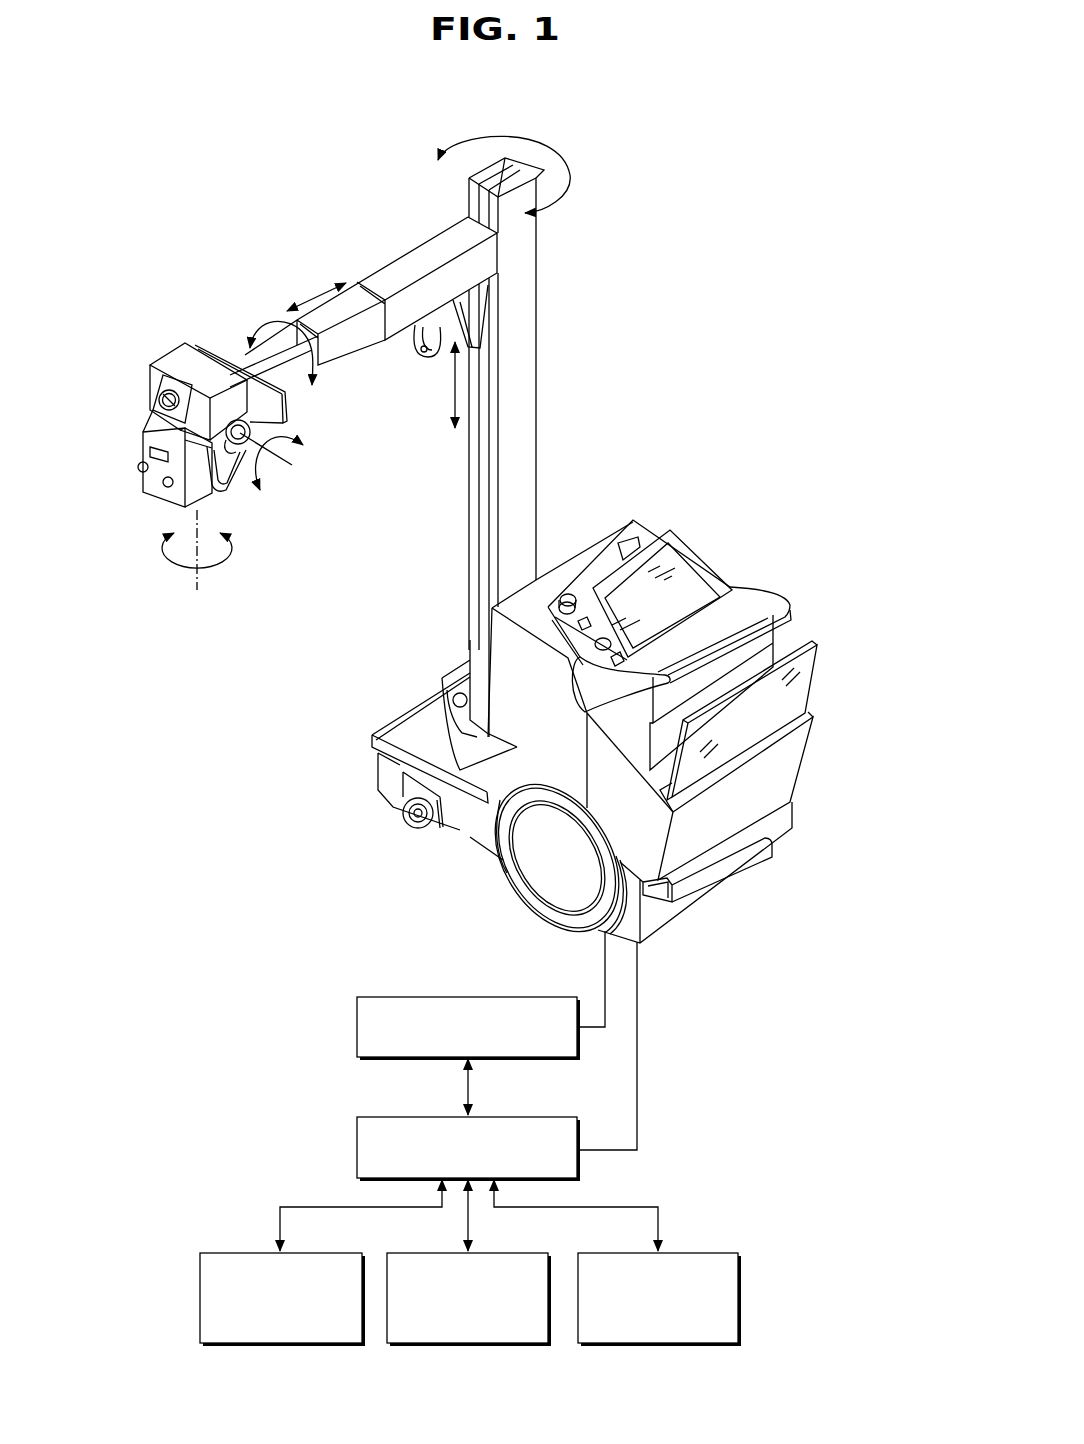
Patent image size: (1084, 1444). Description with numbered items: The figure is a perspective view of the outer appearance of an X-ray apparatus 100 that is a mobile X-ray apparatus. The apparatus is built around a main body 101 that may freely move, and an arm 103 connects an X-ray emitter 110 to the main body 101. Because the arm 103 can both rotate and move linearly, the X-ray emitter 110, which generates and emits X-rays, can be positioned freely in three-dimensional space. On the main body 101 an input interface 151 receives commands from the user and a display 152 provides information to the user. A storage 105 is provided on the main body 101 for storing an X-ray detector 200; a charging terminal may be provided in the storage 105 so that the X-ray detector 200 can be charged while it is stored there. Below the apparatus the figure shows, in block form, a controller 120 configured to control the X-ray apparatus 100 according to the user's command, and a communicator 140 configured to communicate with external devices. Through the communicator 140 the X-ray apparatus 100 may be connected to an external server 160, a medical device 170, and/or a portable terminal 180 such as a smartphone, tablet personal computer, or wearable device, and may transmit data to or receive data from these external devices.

The X-ray apparatus 100 is at (757, 138).
The main body 101 is at (495, 678).
The arm 103 is at (548, 348).
The storage 105 is at (797, 763).
The X-ray emitter 110 is at (163, 340).
The controller 120 is at (510, 997).
The communicator 140 is at (503, 1117).
The input interface 151 is at (573, 605).
The display 152 is at (685, 570).
The external server 160 is at (300, 1252).
The medical device 170 is at (490, 1252).
The portable terminal 180 is at (688, 1252).
The X-ray detector 200 is at (808, 687).